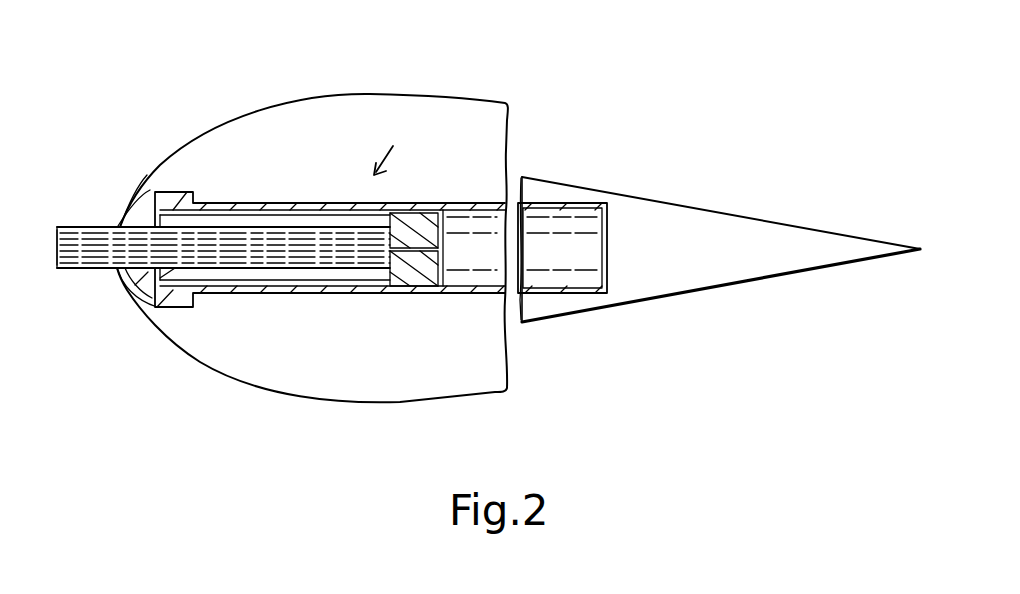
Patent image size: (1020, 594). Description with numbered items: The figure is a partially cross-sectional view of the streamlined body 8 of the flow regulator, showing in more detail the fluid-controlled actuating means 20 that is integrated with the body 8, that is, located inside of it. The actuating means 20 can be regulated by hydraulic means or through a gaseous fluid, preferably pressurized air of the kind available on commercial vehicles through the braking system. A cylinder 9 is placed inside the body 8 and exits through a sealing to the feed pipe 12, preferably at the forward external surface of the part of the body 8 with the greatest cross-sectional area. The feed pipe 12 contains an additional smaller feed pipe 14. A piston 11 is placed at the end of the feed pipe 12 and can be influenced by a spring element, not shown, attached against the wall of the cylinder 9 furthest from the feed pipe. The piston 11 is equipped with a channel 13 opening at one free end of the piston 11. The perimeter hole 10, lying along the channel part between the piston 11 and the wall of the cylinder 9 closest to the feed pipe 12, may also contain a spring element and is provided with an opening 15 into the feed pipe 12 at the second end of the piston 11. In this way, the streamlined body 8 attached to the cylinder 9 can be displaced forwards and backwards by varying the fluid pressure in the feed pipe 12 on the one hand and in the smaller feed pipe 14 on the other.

The streamlined body 8 is at (548, 82).
The cylinder 9 is at (512, 266).
The perimeter hole 10 is at (248, 287).
The piston 11 is at (437, 270).
The feed pipe 12 is at (97, 258).
The channel 13 is at (433, 250).
The smaller feed pipe 14 is at (56, 249).
The opening 15 is at (326, 230).
The actuating means 20 is at (401, 147).